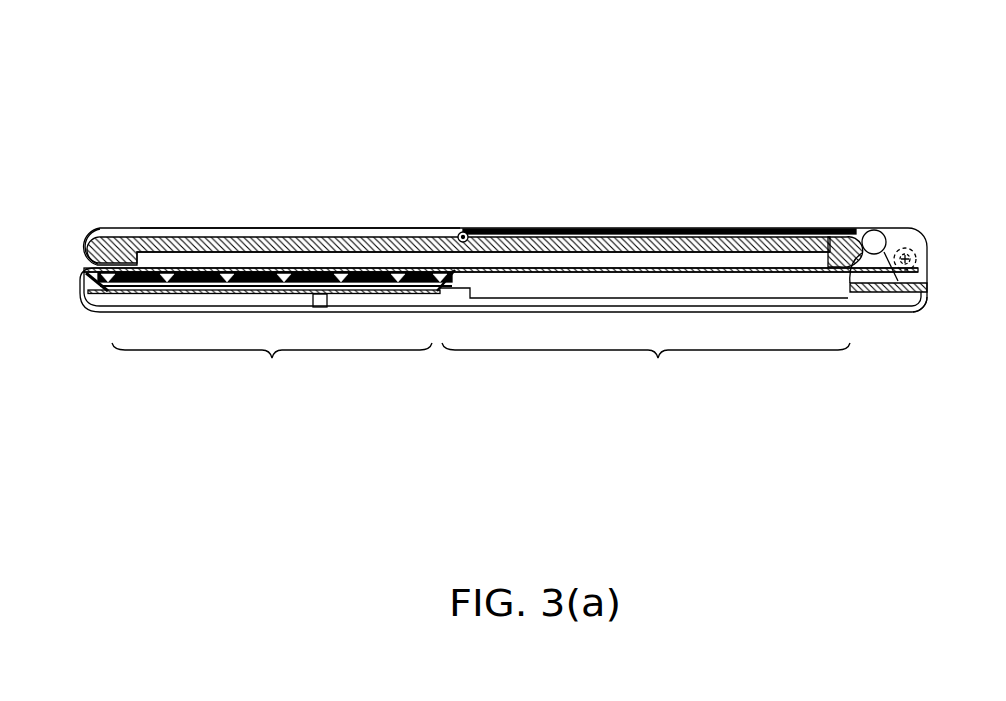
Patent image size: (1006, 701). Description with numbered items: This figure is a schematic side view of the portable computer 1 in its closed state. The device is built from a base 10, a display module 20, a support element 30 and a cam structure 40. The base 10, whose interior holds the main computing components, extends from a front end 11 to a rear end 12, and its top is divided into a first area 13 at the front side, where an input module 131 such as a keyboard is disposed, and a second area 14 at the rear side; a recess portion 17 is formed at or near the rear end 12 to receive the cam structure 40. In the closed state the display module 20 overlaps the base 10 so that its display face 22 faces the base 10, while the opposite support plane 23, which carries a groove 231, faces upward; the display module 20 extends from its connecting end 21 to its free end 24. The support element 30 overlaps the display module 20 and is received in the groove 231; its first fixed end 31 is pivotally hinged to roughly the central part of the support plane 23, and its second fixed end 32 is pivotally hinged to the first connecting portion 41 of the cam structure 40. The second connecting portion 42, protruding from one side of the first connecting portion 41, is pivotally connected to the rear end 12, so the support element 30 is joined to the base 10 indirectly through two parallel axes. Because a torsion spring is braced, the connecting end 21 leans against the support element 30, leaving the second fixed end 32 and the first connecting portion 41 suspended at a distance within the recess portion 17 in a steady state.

The portable computer 1 is at (958, 50).
The base 10 is at (507, 264).
The front end 11 is at (78, 283).
The rear end 12 is at (930, 292).
The first area 13 is at (272, 374).
The second area 14 is at (646, 376).
The recess portion 17 is at (866, 294).
The display module 20 is at (439, 210).
The connecting end 21 is at (838, 238).
The display face 22 is at (232, 272).
The support plane 23 is at (392, 228).
The groove 231 is at (296, 237).
The free end 24 is at (82, 246).
The support element 30 is at (657, 197).
The first fixed end 31 is at (465, 231).
The second fixed end 32 is at (878, 238).
The cam structure 40 is at (904, 269).
The first connecting portion 41 is at (858, 237).
The second connecting portion 42 is at (914, 233).
The input module 131 is at (259, 295).